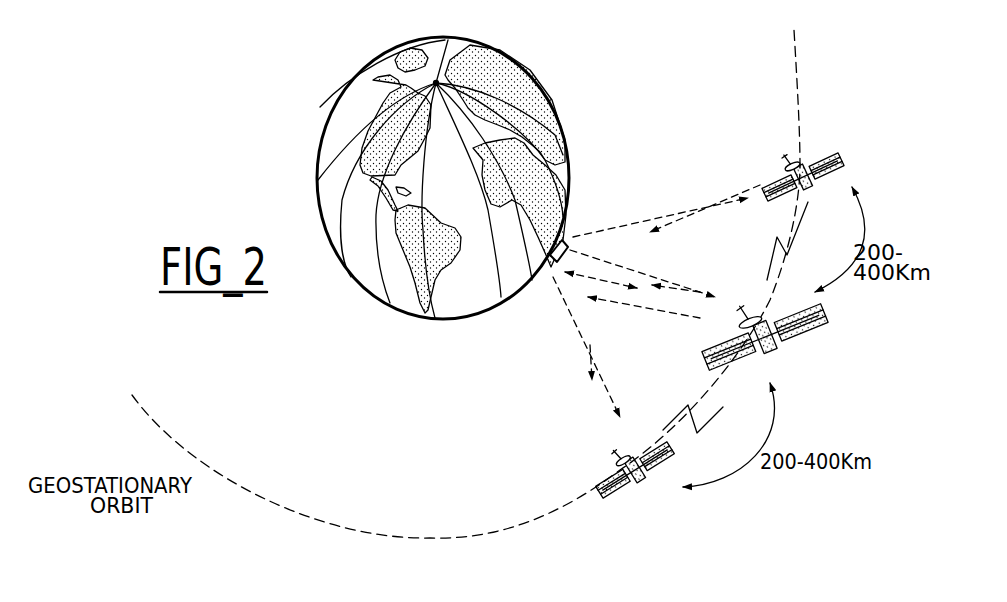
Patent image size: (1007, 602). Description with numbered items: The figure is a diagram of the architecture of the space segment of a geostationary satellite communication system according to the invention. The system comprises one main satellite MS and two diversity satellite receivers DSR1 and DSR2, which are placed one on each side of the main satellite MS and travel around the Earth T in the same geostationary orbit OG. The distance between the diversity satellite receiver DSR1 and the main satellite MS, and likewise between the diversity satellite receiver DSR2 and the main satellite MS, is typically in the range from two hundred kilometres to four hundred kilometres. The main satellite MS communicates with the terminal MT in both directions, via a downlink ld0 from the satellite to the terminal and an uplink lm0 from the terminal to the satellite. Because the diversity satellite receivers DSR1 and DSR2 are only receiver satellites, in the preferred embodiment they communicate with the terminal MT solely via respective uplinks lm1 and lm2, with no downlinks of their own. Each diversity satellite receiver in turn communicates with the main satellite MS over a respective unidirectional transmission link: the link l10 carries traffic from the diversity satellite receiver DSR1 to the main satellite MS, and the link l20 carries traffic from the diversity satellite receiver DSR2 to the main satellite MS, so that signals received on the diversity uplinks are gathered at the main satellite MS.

The Earth T is at (548, 99).
The terminal MT is at (566, 241).
The main satellite MS is at (833, 315).
The diversity satellite receiver DSR1 is at (638, 485).
The diversity satellite receiver DSR2 is at (841, 159).
The geostationary orbit OG is at (797, 69).
The uplink lm0 is at (680, 278).
The uplink lm1 is at (580, 348).
The uplink lm2 is at (658, 210).
The downlink ld0 is at (648, 310).
The unidirectional transmission link l10 is at (710, 421).
The unidirectional transmission link l20 is at (798, 232).